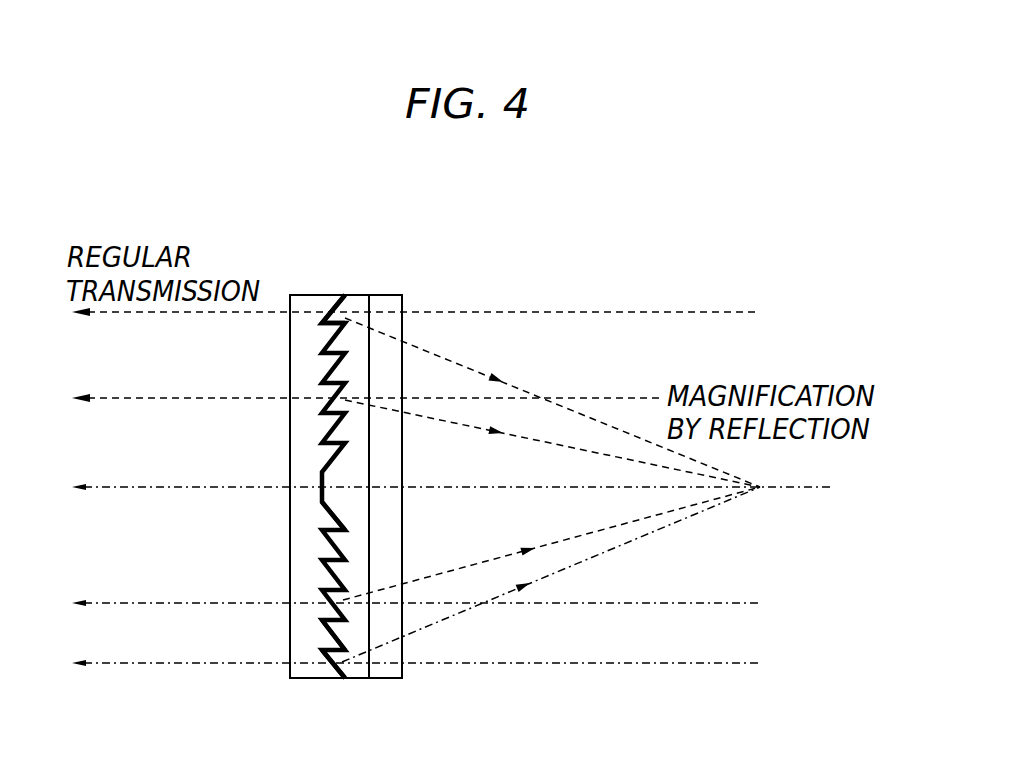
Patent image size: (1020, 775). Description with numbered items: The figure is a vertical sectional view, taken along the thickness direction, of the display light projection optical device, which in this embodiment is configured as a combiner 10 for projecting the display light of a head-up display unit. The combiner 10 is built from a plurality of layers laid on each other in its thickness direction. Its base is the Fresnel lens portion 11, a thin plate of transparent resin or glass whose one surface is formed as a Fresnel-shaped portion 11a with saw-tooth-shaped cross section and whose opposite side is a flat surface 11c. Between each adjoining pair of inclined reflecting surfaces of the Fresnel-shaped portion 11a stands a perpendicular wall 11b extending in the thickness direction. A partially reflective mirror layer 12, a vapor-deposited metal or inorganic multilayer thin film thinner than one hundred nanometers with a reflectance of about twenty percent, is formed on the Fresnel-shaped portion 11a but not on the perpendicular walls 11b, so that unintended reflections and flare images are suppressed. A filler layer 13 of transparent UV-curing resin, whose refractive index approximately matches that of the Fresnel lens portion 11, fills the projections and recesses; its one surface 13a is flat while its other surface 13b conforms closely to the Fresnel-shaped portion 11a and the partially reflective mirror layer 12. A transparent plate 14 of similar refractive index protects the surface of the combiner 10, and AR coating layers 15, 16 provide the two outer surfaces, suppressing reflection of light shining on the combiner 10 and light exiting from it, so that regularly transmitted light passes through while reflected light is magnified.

The combiner 10 is at (325, 202).
The Fresnel lens portion 11 is at (312, 650).
The Fresnel-shaped portion 11a is at (345, 447).
The perpendicular wall 11b is at (343, 315).
The flat surface 11c is at (332, 635).
The partially reflective mirror layer 12 is at (333, 513).
The filler layer 13 is at (365, 643).
The surface 13a is at (369, 503).
The other surface 13b is at (340, 665).
The transparent plate 14 is at (390, 625).
The AR coating layer 15 is at (290, 322).
The AR coating layer 16 is at (403, 322).